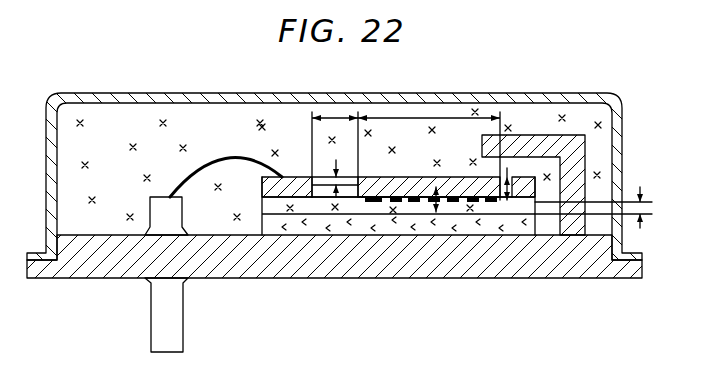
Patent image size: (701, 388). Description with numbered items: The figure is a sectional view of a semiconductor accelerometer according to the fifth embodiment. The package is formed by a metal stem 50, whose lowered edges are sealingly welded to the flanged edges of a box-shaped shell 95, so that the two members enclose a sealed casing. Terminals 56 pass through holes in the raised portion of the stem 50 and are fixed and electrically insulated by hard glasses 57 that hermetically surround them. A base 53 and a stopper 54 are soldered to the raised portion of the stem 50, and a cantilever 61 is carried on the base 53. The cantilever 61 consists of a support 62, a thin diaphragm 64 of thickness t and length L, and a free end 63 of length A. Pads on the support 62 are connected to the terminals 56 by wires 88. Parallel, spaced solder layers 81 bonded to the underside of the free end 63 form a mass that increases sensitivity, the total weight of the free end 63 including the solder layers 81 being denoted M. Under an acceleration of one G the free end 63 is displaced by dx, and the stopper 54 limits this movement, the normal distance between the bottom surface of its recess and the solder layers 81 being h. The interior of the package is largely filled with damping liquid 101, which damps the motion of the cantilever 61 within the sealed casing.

The damping liquid 101 is at (126, 122).
The wires 88 is at (232, 158).
The support 62 is at (292, 178).
The diaphragm 64 is at (322, 178).
The free end 63 is at (380, 178).
The cantilever 61 is at (455, 152).
The shell 95 is at (557, 97).
The stopper 54 is at (577, 153).
The hard glasses 57 is at (188, 282).
The terminals 56 is at (170, 327).
The base 53 is at (312, 223).
The solder layers 81 is at (492, 203).
The stem 50 is at (553, 255).
The length of the cantilever diaphragm L is at (336, 116).
The length of the cantilever free end A is at (415, 118).
The thickness of the cantilever diaphragm t is at (350, 190).
The displacement of the cantilever free end dx is at (507, 168).
The normal distance h is at (593, 193).
The total weight of the cantilever free end M is at (436, 212).